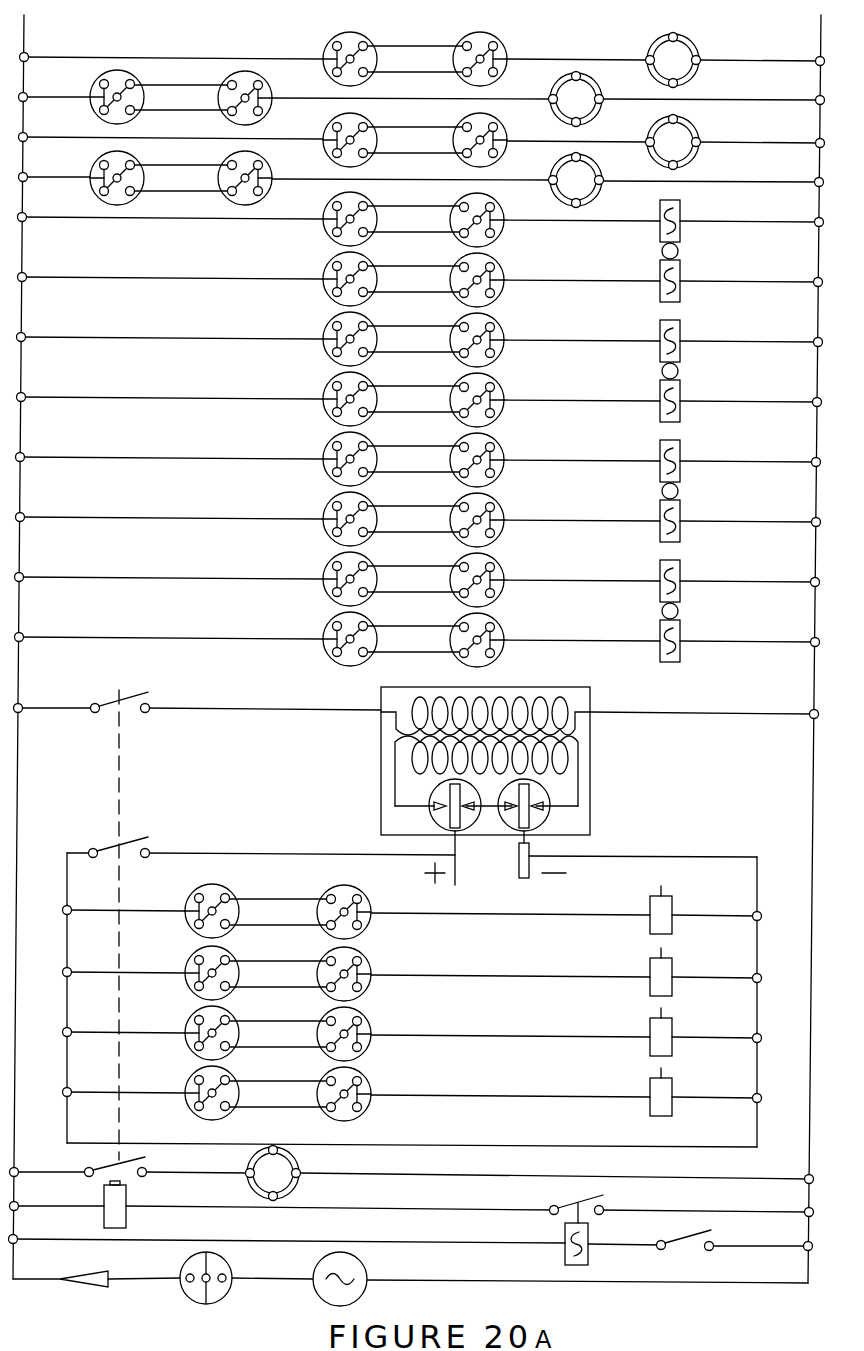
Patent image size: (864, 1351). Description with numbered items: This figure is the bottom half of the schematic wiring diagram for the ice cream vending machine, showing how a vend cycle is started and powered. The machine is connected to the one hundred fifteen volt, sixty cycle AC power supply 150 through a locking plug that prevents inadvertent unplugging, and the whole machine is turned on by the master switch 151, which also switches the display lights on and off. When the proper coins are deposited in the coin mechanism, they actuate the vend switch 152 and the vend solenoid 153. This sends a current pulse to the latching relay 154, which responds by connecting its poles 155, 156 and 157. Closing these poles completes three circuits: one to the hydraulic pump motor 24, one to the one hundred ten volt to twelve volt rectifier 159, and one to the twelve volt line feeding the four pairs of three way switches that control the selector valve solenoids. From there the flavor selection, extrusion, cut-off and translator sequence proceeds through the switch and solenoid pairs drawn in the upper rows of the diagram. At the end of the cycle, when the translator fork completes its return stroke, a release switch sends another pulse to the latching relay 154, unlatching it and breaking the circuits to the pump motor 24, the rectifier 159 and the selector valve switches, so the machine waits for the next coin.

The hydraulic pump motor 24 is at (297, 1186).
The AC power supply 150 is at (367, 1262).
The master switch 151 is at (232, 1262).
The vend switch 152 is at (680, 1244).
The vend solenoid 153 is at (565, 1253).
The latching relay 154 is at (128, 1190).
The pole 155 is at (102, 1170).
The pole 156 is at (112, 843).
The pole 157 is at (113, 690).
The 110 volt to 12 volt rectifier 159 is at (381, 773).